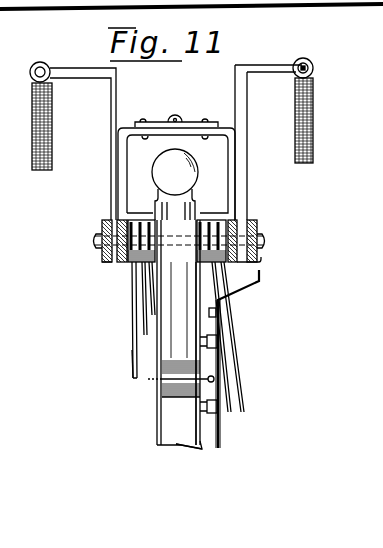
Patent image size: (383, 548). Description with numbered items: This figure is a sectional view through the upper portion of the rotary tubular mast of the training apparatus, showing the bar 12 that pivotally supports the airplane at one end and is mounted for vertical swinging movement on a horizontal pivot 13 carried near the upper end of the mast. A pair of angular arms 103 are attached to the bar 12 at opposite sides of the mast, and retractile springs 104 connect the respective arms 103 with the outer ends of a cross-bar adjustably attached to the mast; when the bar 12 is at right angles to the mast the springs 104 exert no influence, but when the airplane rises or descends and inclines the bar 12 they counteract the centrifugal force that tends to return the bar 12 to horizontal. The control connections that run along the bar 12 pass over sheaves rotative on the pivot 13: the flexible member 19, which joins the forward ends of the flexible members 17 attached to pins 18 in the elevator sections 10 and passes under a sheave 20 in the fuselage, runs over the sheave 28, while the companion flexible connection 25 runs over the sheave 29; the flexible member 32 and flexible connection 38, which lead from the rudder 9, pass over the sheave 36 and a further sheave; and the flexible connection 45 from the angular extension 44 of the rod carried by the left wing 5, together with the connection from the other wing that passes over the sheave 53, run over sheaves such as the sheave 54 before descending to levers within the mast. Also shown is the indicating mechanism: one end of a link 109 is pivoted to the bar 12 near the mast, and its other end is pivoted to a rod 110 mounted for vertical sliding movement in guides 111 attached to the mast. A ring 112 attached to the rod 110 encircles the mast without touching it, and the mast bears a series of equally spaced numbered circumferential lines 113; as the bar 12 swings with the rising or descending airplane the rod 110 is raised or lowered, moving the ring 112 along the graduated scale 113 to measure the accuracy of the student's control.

The angular arms 103 is at (238, 85).
The springs 104 is at (53, 147).
The elevator sections 10 is at (231, 218).
The bar 12 is at (243, 221).
The horizontal pivot 13 is at (263, 238).
The angular extension 44 is at (149, 231).
The sheave 54 is at (200, 240).
The flexible members 17 is at (168, 413).
The sheave 36 is at (110, 263).
The sheave 28 is at (137, 263).
The flexible connection 45 is at (153, 283).
The flexible member 19 is at (144, 313).
The flexible member 32 is at (133, 356).
The ring 112 is at (148, 382).
The wing 5 is at (181, 369).
The pins 18 is at (181, 390).
The sheave 20 is at (181, 401).
The numbered lines 113 is at (193, 405).
The sheave 53 is at (210, 278).
The sheave 29 is at (233, 267).
The link 109 is at (259, 285).
The rod 110 is at (216, 441).
The flexible connection 25 is at (243, 290).
The flexible connection 38 is at (203, 334).
The guides 111 is at (218, 348).
The rudder 9 is at (376, 240).